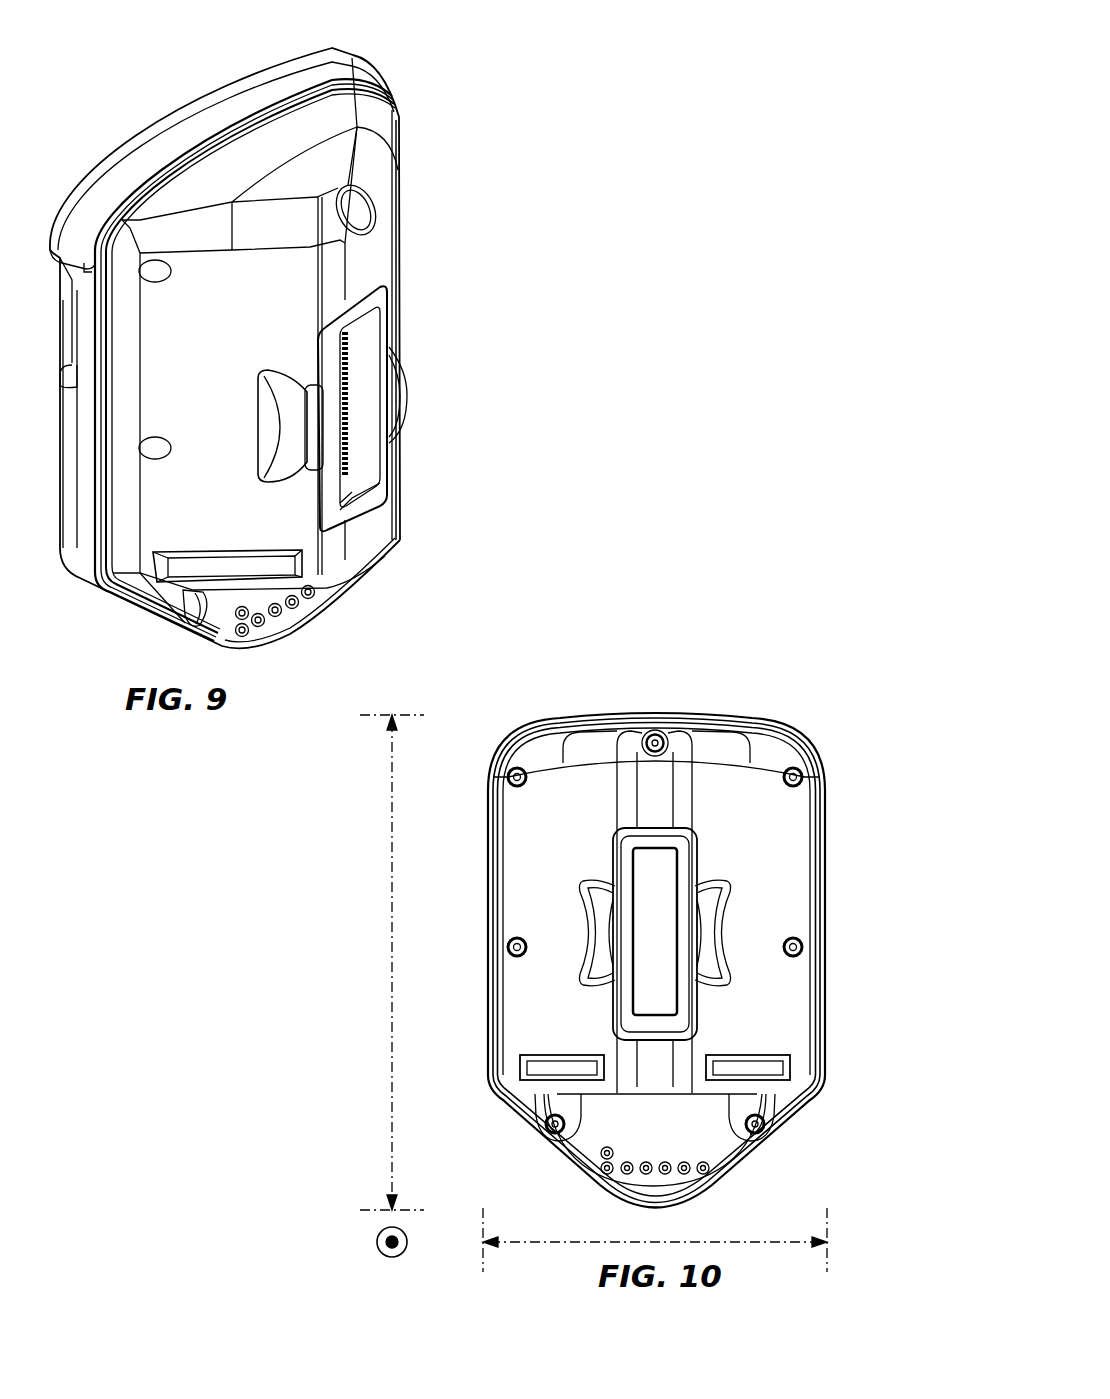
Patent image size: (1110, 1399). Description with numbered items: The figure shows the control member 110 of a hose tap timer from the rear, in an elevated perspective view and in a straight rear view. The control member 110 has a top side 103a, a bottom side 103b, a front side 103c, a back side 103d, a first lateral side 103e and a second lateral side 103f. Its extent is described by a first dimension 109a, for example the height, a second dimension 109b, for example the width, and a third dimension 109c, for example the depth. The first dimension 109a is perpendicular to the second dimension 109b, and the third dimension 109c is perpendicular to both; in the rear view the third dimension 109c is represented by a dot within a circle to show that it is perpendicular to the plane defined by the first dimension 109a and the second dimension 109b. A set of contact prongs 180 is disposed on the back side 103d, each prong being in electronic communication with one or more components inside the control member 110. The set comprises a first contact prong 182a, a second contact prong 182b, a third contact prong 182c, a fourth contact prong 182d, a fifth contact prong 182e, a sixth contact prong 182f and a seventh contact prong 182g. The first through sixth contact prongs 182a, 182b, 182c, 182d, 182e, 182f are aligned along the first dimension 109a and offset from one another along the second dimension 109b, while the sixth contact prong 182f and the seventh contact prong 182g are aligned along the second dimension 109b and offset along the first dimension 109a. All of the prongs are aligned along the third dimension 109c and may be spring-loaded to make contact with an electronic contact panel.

In FIG. 9, the control member 110 is at (393, 93).
In FIG. 10, the control member 110 is at (780, 731).
In FIG. 9, the top side 103a is at (242, 98).
In FIG. 9, the bottom side 103b is at (157, 620).
In FIG. 9, the front side 103c is at (115, 155).
In FIG. 9, the back side 103d is at (365, 276).
In FIG. 10, the back side 103d is at (718, 782).
In FIG. 9, the first lateral side 103e is at (83, 430).
In FIG. 9, the second lateral side 103f is at (400, 160).
In FIG. 9, the set of contact prongs 180 is at (262, 633).
In FIG. 10, the set of contact prongs 180 is at (549, 1157).
In FIG. 10, the first contact prong 182a is at (703, 1162).
In FIG. 10, the second contact prong 182b is at (686, 1170).
In FIG. 10, the third contact prong 182c is at (667, 1171).
In FIG. 10, the fourth contact prong 182d is at (648, 1172).
In FIG. 10, the fifth contact prong 182e is at (627, 1172).
In FIG. 10, the sixth contact prong 182f is at (603, 1165).
In FIG. 10, the seventh contact prong 182g is at (603, 1149).
In FIG. 10, the first dimension 109a is at (392, 1063).
In FIG. 10, the second dimension 109b is at (558, 1243).
In FIG. 10, the third dimension 109c is at (377, 1242).